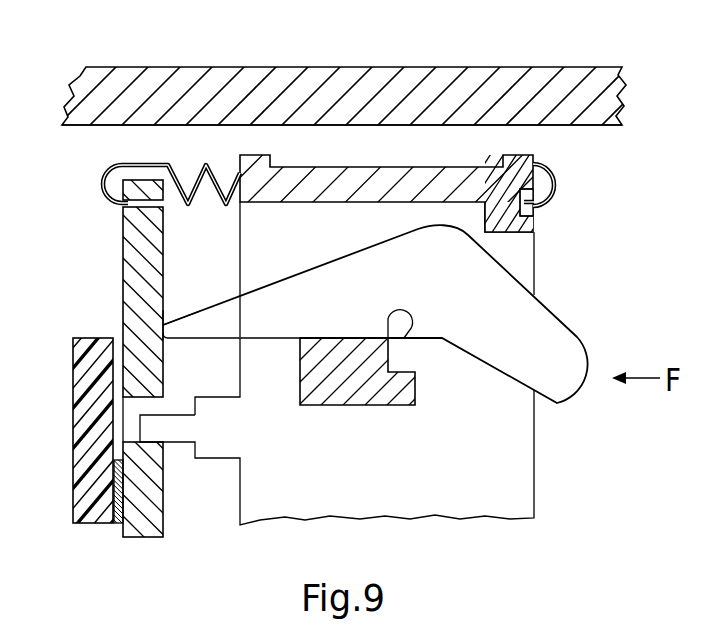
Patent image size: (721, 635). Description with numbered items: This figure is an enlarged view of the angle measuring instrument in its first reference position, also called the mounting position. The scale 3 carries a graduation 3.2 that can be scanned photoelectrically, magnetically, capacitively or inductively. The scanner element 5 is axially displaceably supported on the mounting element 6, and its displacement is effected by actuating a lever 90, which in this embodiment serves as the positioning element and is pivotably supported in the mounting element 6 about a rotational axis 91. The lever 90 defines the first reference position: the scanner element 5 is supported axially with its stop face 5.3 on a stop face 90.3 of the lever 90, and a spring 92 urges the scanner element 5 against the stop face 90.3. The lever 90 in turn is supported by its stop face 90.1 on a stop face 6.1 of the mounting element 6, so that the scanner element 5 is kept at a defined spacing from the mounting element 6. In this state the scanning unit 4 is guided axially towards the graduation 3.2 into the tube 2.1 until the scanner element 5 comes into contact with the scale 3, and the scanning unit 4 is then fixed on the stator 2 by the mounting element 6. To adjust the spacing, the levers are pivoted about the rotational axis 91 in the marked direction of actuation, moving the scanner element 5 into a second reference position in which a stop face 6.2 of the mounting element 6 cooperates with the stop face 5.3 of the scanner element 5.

The stator 2 is at (160, 95).
The tube 2.1 is at (590, 131).
The scale 3 is at (74, 450).
The graduation 3.2 is at (116, 524).
The scanning unit 4 is at (573, 471).
The scanner element 5 is at (150, 532).
The stop face 5.3 is at (152, 322).
The mounting element 6 is at (413, 168).
The stop face 6.1 is at (316, 332).
The stop face 6.2 is at (196, 360).
The lever 90 is at (553, 333).
The stop face 90.1 is at (354, 328).
The stop face 90.3 is at (176, 326).
The rotational axis 91 is at (403, 313).
The spring 92 is at (110, 168).